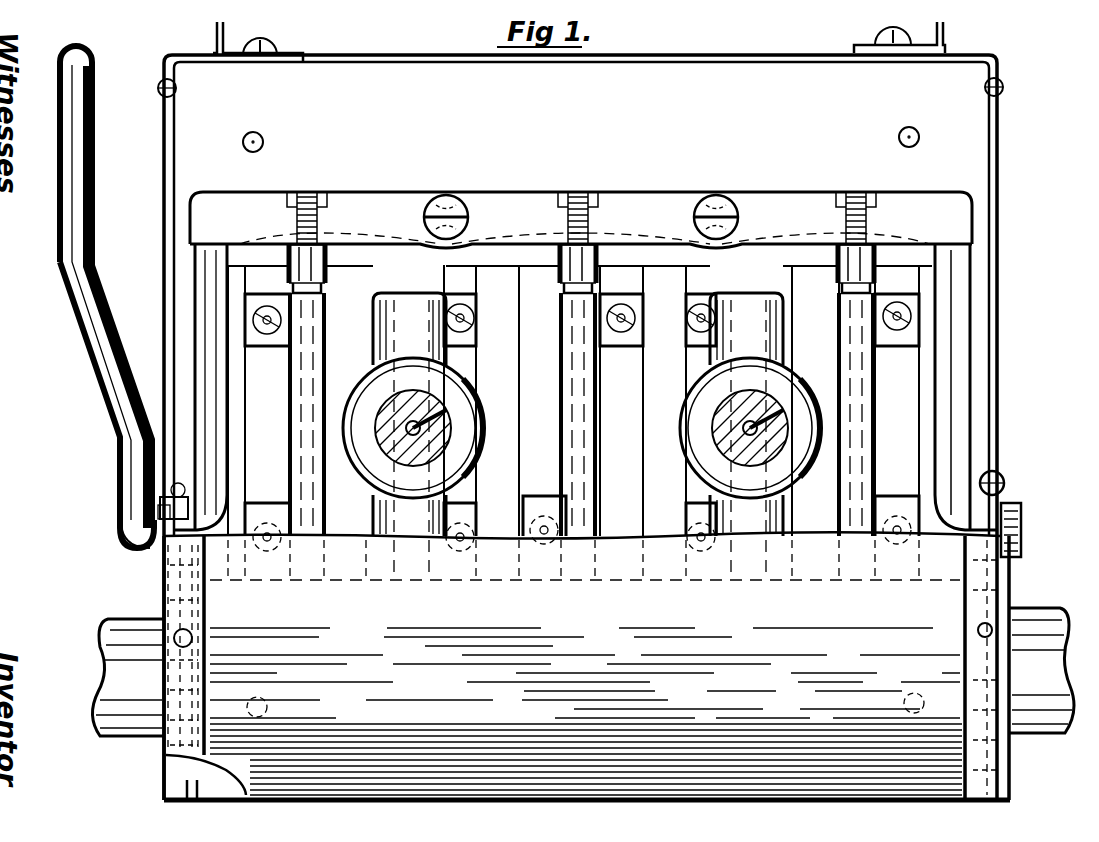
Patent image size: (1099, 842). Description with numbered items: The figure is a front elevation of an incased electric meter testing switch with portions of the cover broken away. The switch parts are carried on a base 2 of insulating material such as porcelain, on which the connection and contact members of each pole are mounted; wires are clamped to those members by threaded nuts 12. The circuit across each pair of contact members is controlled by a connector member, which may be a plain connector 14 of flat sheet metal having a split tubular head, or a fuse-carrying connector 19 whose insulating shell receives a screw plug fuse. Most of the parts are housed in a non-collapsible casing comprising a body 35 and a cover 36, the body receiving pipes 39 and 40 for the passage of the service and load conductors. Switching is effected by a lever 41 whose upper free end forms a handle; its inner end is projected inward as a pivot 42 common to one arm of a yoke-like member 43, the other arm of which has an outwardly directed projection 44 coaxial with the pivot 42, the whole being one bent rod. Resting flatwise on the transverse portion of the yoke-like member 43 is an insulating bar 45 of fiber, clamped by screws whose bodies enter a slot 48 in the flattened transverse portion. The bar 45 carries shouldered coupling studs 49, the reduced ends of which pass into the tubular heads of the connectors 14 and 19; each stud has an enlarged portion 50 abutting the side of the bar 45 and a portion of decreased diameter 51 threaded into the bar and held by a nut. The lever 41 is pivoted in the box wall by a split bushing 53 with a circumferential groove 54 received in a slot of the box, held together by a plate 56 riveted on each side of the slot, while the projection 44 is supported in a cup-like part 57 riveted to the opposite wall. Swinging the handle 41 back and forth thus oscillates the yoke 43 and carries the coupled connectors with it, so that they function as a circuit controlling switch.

The base 2 is at (912, 390).
The threaded nut 12 is at (474, 323).
The plain connector 14 is at (305, 372).
The fuse-carrying connector 19 is at (581, 436).
The casing body 35 is at (998, 213).
The cover 36 is at (838, 766).
The pipe 39 is at (1042, 710).
The pipe 40 is at (127, 742).
The lever 41 is at (55, 240).
The pivot 42 is at (155, 568).
The yoke-like member 43 is at (200, 303).
The outwardly directed projection 44 is at (1004, 498).
The insulating bar 45 is at (380, 207).
The slot 48 is at (454, 196).
The coupling stud 49 is at (323, 290).
The enlarged portion 50 is at (329, 265).
The portion of decreased diameter 51 is at (320, 209).
The split bushing 53 is at (160, 538).
The circumferential groove 54 is at (160, 512).
The plate 56 is at (204, 508).
The cup-like part 57 is at (1026, 535).